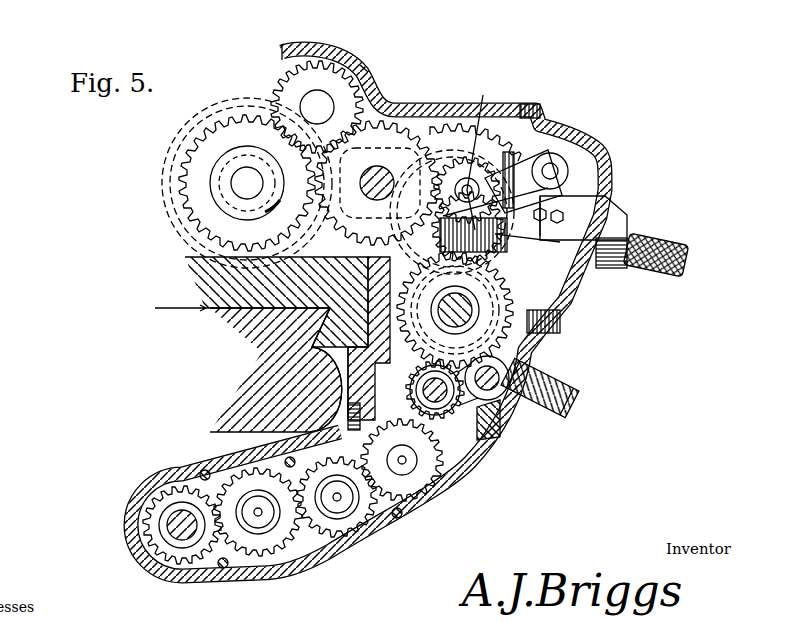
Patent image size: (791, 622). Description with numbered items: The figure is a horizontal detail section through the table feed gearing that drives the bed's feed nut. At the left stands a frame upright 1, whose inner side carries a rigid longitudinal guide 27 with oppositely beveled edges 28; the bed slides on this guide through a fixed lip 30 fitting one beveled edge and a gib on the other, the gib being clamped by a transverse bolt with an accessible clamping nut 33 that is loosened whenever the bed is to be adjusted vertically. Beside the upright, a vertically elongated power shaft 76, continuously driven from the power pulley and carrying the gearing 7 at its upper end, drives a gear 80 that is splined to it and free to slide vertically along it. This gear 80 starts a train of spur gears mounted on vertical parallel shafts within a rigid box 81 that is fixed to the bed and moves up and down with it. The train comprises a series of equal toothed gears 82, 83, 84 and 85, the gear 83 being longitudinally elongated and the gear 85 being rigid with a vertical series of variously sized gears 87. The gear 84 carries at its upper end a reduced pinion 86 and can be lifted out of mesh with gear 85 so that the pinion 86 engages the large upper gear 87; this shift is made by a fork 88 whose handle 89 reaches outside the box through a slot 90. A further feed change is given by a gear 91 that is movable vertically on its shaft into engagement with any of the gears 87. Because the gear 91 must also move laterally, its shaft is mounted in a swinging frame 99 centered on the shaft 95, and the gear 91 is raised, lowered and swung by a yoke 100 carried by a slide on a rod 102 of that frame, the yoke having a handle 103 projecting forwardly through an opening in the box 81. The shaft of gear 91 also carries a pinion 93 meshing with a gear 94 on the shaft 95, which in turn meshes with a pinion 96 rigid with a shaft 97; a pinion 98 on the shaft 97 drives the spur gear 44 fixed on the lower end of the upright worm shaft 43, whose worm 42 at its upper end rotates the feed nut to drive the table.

The frame upright 1 is at (297, 344).
The gearing 7 is at (483, 95).
The longitudinal guide 27 is at (242, 327).
The beveled edge 28 is at (312, 389).
The lip or flange 30 is at (332, 327).
The clamping nut 33 is at (276, 302).
The worm 42 is at (250, 220).
The worm shaft 43 is at (245, 183).
The spur gear 44 is at (232, 122).
The power shaft 76 is at (190, 540).
The gear 80 is at (150, 555).
The box or housing 81 is at (400, 104).
The gear 82 is at (348, 532).
The gear 83 is at (425, 470).
The gear 84 is at (324, 383).
The gear 85 is at (466, 328).
The pinion 86 is at (420, 370).
The variously sized gear 87 is at (505, 300).
The fork 88 is at (495, 432).
The handle 89 is at (535, 374).
The slot 90 is at (500, 395).
The gear 91 is at (442, 140).
The pinion 93 is at (445, 206).
The gear 94 is at (355, 230).
The shaft 95 is at (376, 180).
The pinion 96 is at (338, 70).
The shaft 97 is at (362, 80).
The pinion 98 is at (288, 60).
The swinging frame 99 is at (556, 152).
The fork or yoke 100 is at (585, 238).
The rod 102 is at (552, 170).
The handle 103 is at (668, 250).